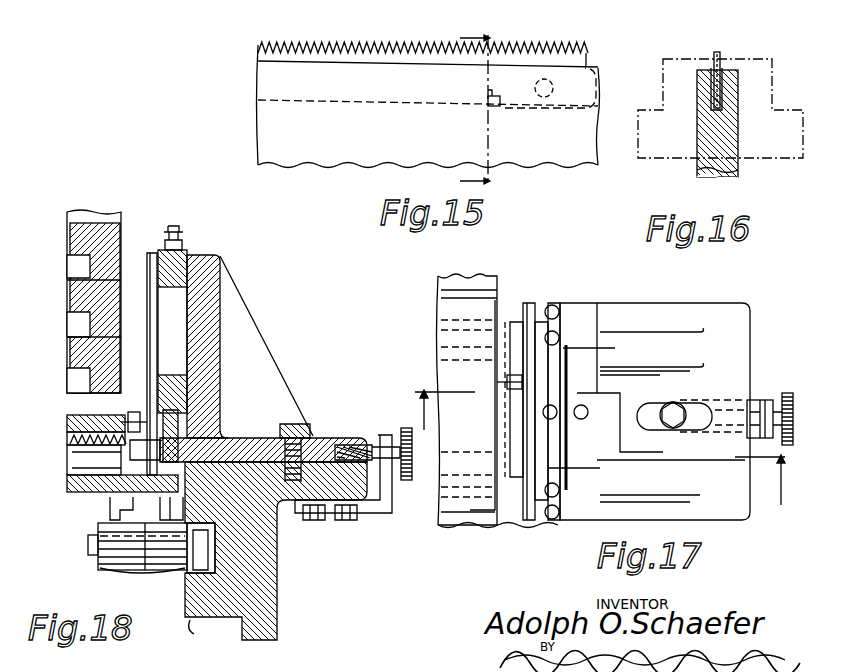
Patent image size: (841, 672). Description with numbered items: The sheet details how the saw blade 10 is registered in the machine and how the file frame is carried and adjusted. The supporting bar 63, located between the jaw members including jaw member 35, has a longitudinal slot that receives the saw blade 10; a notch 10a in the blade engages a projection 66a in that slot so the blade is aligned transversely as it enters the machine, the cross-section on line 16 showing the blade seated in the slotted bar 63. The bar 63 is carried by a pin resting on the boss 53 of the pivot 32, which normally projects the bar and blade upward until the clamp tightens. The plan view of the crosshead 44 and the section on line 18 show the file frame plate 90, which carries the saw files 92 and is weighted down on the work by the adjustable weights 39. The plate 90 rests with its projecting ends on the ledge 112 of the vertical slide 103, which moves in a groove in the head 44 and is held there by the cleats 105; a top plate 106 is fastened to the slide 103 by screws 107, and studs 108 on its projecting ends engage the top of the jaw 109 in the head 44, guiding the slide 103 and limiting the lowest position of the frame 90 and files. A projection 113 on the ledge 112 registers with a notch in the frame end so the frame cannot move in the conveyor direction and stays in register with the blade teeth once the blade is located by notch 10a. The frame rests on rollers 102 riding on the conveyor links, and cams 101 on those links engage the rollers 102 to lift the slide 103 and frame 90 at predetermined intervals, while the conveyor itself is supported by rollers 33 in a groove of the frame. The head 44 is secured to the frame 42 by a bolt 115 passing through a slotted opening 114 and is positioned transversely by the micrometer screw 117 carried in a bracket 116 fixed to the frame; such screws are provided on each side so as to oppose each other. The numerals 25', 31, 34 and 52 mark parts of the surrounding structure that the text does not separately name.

In FIG. 15, the saw blade 10 is at (357, 50).
In FIG. 16, the saw blade 10 is at (715, 52).
In FIG. 15, the notch in the blade 10a is at (488, 97).
In FIG. 15, the section line 16— 16 is at (479, 106).
In FIG. 17, the section line 18— 18 is at (601, 439).
In FIG. 18, the base frame 25' is at (294, 607).
In FIG. 17, the guide plate 31 is at (452, 528).
In FIG. 18, the guide plate 31 is at (67, 485).
In FIG. 18, the pivot 32 is at (88, 545).
In FIG. 18, the rollers 33 is at (185, 580).
In FIG. 18, the base foot 34 is at (203, 633).
In FIG. 18, the jaw member 35 is at (67, 466).
In FIG. 17, the adjustable weights 39 is at (441, 312).
In FIG. 18, the adjustable weights 39 is at (122, 228).
In FIG. 18, the frame 42 is at (268, 525).
In FIG. 17, the crosshead 44 is at (726, 320).
In FIG. 18, the crosshead 44 is at (232, 292).
In FIG. 18, the motor 52 is at (100, 532).
In FIG. 18, the boss 53 is at (100, 568).
In FIG. 15, the supporting bar 63 is at (305, 158).
In FIG. 16, the supporting bar 63 is at (700, 168).
In FIG. 15, the projection 66a is at (503, 98).
In FIG. 16, the projection 66a is at (720, 100).
In FIG. 18, the file frame plate 90 is at (67, 426).
In FIG. 18, the saw files 92 is at (67, 440).
In FIG. 18, the cams 101 is at (110, 500).
In FIG. 18, the rollers 102 is at (190, 432).
In FIG. 18, the vertical slide 103 is at (216, 264).
In FIG. 17, the cleats 105 is at (530, 303).
In FIG. 18, the cleats 105 is at (147, 264).
In FIG. 17, the top plate 106 is at (579, 411).
In FIG. 18, the top plate 106 is at (186, 252).
In FIG. 17, the screws 107 is at (600, 351).
In FIG. 18, the screws 107 is at (180, 224).
In FIG. 17, the studs 108 is at (560, 312).
In FIG. 17, the jaw 109 is at (557, 308).
In FIG. 17, the ledge 112 is at (512, 300).
In FIG. 18, the ledge 112 is at (163, 455).
In FIG. 17, the projection 113 is at (507, 383).
In FIG. 18, the projection 113 is at (134, 411).
In FIG. 17, the slotted opening 114 is at (648, 425).
In FIG. 17, the bolt 115 is at (673, 430).
In FIG. 18, the bolt 115 is at (305, 428).
In FIG. 17, the bracket 116 is at (770, 400).
In FIG. 18, the bracket 116 is at (367, 514).
In FIG. 17, the micrometer screw 117 is at (787, 393).
In FIG. 18, the micrometer screw 117 is at (406, 428).